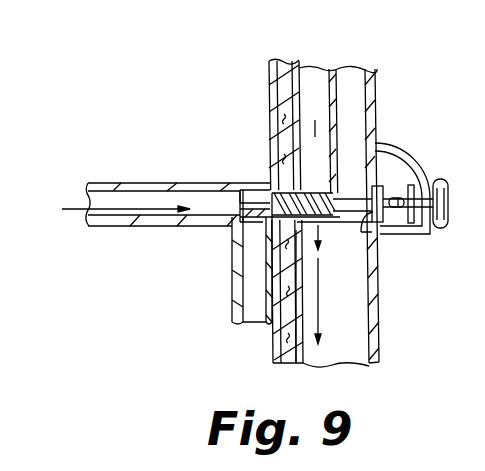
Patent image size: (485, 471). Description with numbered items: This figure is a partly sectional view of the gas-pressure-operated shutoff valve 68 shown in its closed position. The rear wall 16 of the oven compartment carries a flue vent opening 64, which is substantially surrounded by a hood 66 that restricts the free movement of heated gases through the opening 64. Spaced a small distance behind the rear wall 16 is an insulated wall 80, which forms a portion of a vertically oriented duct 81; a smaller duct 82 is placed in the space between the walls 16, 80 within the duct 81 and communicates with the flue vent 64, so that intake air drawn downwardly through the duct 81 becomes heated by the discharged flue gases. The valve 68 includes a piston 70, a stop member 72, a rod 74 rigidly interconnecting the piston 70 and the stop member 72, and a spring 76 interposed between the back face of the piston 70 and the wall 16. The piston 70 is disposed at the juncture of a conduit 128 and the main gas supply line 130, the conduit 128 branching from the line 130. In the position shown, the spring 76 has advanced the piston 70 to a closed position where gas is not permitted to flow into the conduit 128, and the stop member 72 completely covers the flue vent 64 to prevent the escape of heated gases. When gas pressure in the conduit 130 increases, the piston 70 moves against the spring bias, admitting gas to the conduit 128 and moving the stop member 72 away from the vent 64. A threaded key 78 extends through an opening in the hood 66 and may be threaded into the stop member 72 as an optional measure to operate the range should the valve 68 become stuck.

The rear wall 16 is at (371, 296).
The flue vent opening 64 is at (366, 236).
The hood 66 is at (416, 150).
The gas-pressure-operated shutoff valve 68 is at (264, 174).
The piston 70 is at (245, 182).
The stop member 72 is at (384, 188).
The rod 74 is at (346, 199).
The spring 76 is at (308, 192).
The threaded key 78 is at (447, 206).
The insulated wall 80 is at (287, 333).
The vertically oriented duct 81 is at (310, 90).
The duct 82 is at (346, 119).
The conduit 128 is at (232, 290).
The main gas supply line 130 is at (157, 228).